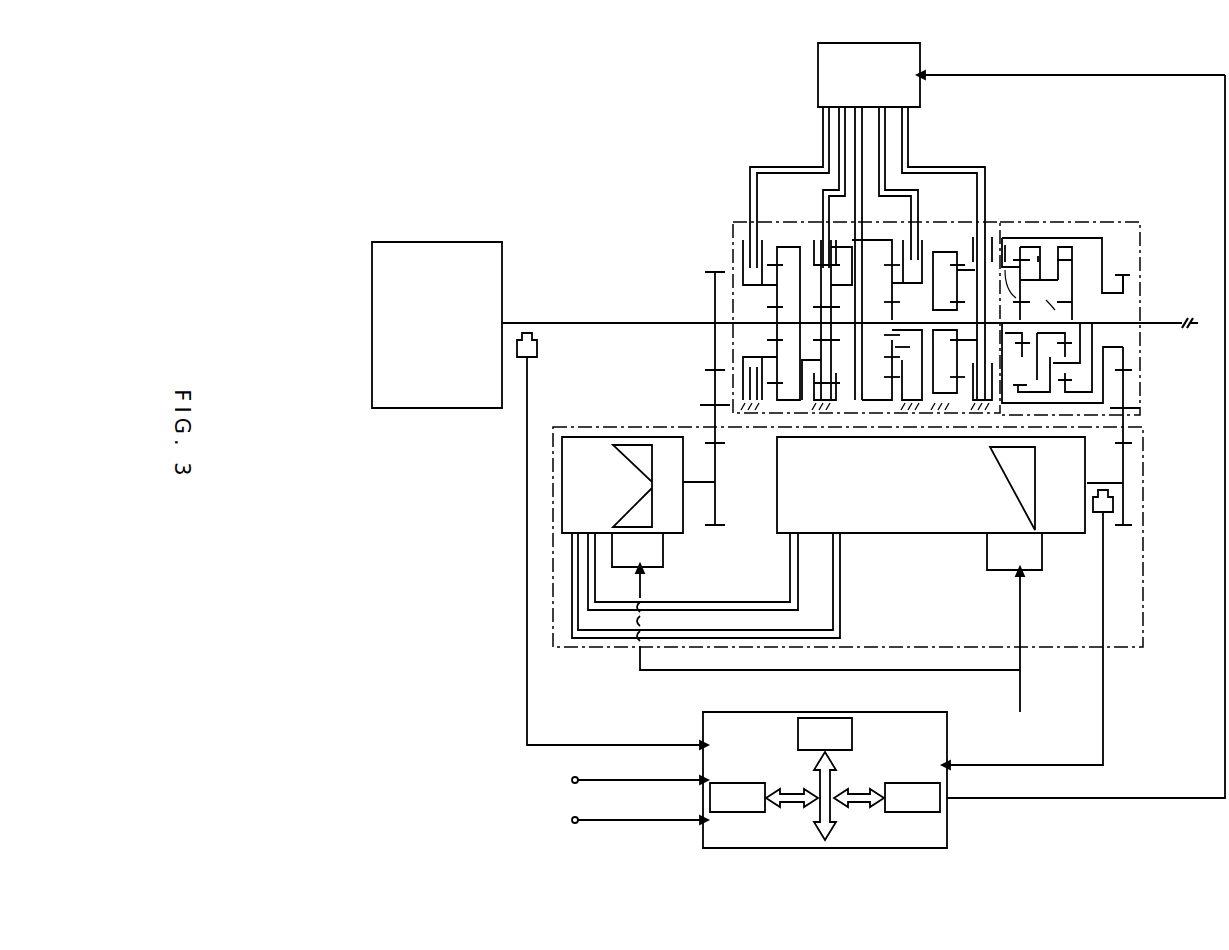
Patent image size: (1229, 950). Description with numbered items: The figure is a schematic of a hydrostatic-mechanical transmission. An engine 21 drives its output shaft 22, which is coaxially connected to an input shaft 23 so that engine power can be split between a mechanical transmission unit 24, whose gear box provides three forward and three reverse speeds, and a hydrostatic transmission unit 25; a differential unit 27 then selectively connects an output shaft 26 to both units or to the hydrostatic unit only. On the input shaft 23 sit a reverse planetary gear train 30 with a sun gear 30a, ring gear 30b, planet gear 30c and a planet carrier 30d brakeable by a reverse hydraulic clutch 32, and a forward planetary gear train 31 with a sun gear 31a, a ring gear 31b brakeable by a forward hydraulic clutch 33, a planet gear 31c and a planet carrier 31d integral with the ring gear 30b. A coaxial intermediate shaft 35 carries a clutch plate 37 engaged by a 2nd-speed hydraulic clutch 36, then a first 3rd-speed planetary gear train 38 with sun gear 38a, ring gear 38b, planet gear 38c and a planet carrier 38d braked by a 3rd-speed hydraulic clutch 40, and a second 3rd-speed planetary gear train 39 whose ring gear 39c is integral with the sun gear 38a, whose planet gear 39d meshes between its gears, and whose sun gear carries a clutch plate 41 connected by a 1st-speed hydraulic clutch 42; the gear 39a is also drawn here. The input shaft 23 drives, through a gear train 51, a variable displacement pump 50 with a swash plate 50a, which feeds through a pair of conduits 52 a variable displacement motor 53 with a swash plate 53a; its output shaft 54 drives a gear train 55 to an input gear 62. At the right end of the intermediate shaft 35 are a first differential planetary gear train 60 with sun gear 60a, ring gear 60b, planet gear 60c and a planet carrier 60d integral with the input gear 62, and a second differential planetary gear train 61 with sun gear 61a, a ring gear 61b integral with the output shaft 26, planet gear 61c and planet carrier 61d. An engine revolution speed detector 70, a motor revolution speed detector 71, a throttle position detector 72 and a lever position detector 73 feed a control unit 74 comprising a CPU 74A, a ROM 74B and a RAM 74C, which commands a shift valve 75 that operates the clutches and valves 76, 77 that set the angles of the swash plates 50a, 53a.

The engine 21 is at (475, 242).
The output shaft of the engine 22 is at (554, 322).
The input shaft 23 is at (670, 322).
The mechanical transmission unit 24 is at (737, 222).
The hydrostatic transmission unit 25 is at (1150, 575).
The output shaft 26 is at (1156, 323).
The differential unit 27 is at (1119, 222).
The reverse planetary gear train 30 is at (760, 238).
The sun gear 30a is at (777, 331).
The ring gear 30b is at (793, 401).
The planet gear 30c is at (777, 295).
The planet carrier 30d is at (743, 362).
The forward planetary gear train 31 is at (832, 240).
The sun gear 31a is at (821, 331).
The ring gear 31b is at (833, 390).
The planet gear 31c is at (821, 295).
The planet carrier 31d is at (836, 345).
The reverse hydraulic clutch 32 is at (763, 248).
The forward hydraulic clutch 33 is at (828, 253).
The intermediate shaft 35 is at (880, 323).
The 2nd-speed hydraulic clutch 36 is at (866, 238).
The clutch plate 37 is at (862, 284).
The first 3rd-speed planetary gear train 38 is at (918, 238).
The sun gear 38a is at (886, 336).
The ring gear 38b is at (888, 392).
The planet gear 38c is at (884, 362).
The planet carrier 38d is at (900, 362).
The second 3rd-speed planetary gear train 39 is at (985, 228).
The gear of fourth gear unit 39a is at (958, 358).
The ring gear 39c is at (946, 407).
The planet gear 39d is at (949, 361).
The 3rd-speed hydraulic clutch 40 is at (922, 243).
The clutch plate 41 is at (957, 304).
The 1st-speed hydraulic clutch 42 is at (975, 238).
The variable displacement pump 50 is at (648, 443).
The discharge controlling variable-angle swash plate 50a is at (630, 443).
The gear train 51 is at (712, 398).
The conduits 52 is at (726, 599).
The variable displacement motor 53 is at (905, 533).
The discharge controlling variable-angle swash plate 53a is at (1012, 478).
The output shaft 54 is at (1096, 483).
The gear train 55 is at (1130, 467).
The first differential planetary gear train 60 is at (1038, 235).
The sun gear 60a is at (1012, 284).
The ring gear 60b is at (1038, 256).
The planet gear 60c is at (1014, 244).
The planet carrier 60d is at (1062, 363).
The second differential planetary gear train 61 is at (1083, 235).
The sun gear 61a is at (1050, 299).
The ring gear 61b is at (1073, 357).
The planet gear 61c is at (1054, 356).
The planet carrier 61d is at (1034, 374).
The input gear 62 is at (1130, 284).
The engine revolution speed detector 70 is at (538, 346).
The motor revolution speed detector 71 is at (1110, 514).
The throttle position detector 72 is at (621, 779).
The lever position detector 73 is at (621, 819).
The control unit 74 is at (733, 848).
The central processing unit 74A is at (853, 740).
The read only memory 74B is at (728, 783).
The random access memory 74C is at (905, 812).
The shift valve 75 is at (888, 43).
The valve 76 is at (664, 552).
The valve 77 is at (1043, 566).